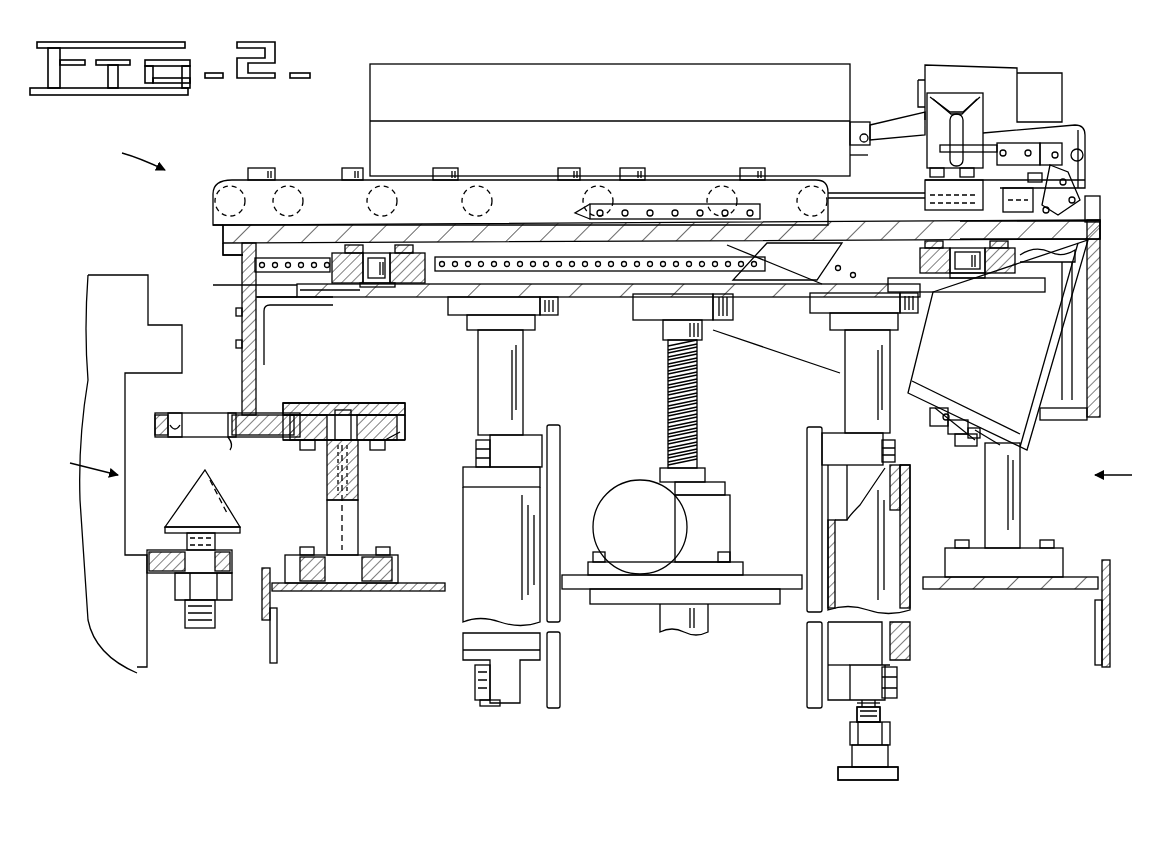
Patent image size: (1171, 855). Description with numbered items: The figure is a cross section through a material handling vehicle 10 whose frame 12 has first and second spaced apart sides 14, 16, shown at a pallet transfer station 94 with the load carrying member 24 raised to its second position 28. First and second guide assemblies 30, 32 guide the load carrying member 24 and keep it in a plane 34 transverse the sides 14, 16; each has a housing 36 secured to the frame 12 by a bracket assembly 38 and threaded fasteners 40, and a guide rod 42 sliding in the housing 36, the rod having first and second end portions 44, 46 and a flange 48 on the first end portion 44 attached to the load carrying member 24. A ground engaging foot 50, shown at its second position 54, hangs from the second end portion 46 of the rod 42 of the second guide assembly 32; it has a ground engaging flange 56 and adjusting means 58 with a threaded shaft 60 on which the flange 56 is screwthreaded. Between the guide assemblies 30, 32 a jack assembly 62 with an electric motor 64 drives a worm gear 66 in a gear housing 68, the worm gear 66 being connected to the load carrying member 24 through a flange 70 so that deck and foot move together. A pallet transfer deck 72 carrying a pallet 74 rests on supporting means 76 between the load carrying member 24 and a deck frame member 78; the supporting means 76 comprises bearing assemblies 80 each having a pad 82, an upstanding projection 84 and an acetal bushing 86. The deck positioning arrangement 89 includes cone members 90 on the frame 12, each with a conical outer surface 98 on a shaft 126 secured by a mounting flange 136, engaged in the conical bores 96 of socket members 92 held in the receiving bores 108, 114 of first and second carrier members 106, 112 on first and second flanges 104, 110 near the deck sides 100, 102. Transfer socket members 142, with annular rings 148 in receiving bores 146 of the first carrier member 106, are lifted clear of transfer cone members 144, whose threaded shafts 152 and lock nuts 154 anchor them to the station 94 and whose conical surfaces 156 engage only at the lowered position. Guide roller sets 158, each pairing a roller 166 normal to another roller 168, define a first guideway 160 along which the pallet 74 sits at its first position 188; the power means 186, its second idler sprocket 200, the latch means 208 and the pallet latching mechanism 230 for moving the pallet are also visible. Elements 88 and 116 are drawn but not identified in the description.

The material handling vehicle 10 is at (128, 157).
The frame 12 is at (270, 656).
The first side 14 is at (265, 610).
The second side 16 is at (1110, 605).
The load carrying member 24 is at (420, 295).
The second position 28 is at (150, 260).
The first guide assembly 30 is at (455, 615).
The second guide assembly 32 is at (915, 605).
The plane 34 is at (218, 286).
The housing 36 is at (507, 564).
The bracket assembly 38 is at (605, 730).
The threaded fasteners 40 is at (362, 470).
The guide rod 42 is at (523, 400).
The first end portion 44 is at (515, 330).
The second end portion 46 is at (474, 670).
The flange 48 is at (525, 305).
The ground engaging foot 50 is at (972, 765).
The second position 54 is at (835, 787).
The ground engaging flange 56 is at (850, 755).
The adjusting means 58 is at (912, 735).
The threaded shaft 60 is at (858, 710).
The jack assembly 62 is at (640, 438).
The electric motor 64 is at (655, 539).
The worm gear 66 is at (700, 425).
The gear housing 68 is at (732, 525).
The flange 70 is at (665, 310).
The pallet transfer deck 72 is at (205, 230).
The pallet 74 is at (617, 107).
The supporting means 76 is at (346, 290).
The deck frame member 78 is at (586, 210).
The bearing assemblies 80 is at (410, 262).
The pad 82 is at (922, 262).
The projection 84 is at (378, 265).
The bushing 86 is at (348, 250).
The bushing 88 is at (362, 290).
The pallet transfer deck positioning arrangement 89 is at (598, 471).
The deck positioning cone members 90 is at (410, 405).
The deck positioning socket members 92 is at (303, 415).
The pallet transfer station 94 is at (149, 357).
The conically shaped bore 96 is at (322, 432).
The conically shaped outer surface 98 is at (962, 445).
The first side 100 is at (226, 238).
The second side 102 is at (1100, 228).
The first flange 104 is at (258, 380).
The first carrier member 106 is at (405, 430).
The deck positioning socket member receiving bore 108 is at (405, 409).
The second flange 110 is at (1092, 372).
The second carrier member 112 is at (948, 424).
The socket member receiving bore 114 is at (955, 425).
The guide pin 116 is at (968, 433).
The shaft 126 is at (358, 530).
The mounting flange 136 is at (400, 565).
The transfer socket members 142 is at (160, 416).
The transfer cone members 144 is at (228, 500).
The transfer socket member receiving bores 146 is at (177, 425).
The annular ring 148 is at (232, 437).
The threaded shaft 152 is at (200, 614).
The lock nut 154 is at (234, 568).
The conically shaped outer surface 156 is at (204, 475).
The first pairs of aligned pallet guide roller sets 158 is at (453, 165).
The first guideway 160 is at (275, 165).
The guide roller 166 is at (562, 168).
The guide roller 168 is at (628, 168).
The power means 186 is at (1075, 323).
The first position 188 is at (852, 66).
The second idler sprocket 200 is at (1078, 256).
The latch means 208 is at (1080, 96).
The pallet latching mechanism 230 is at (872, 112).